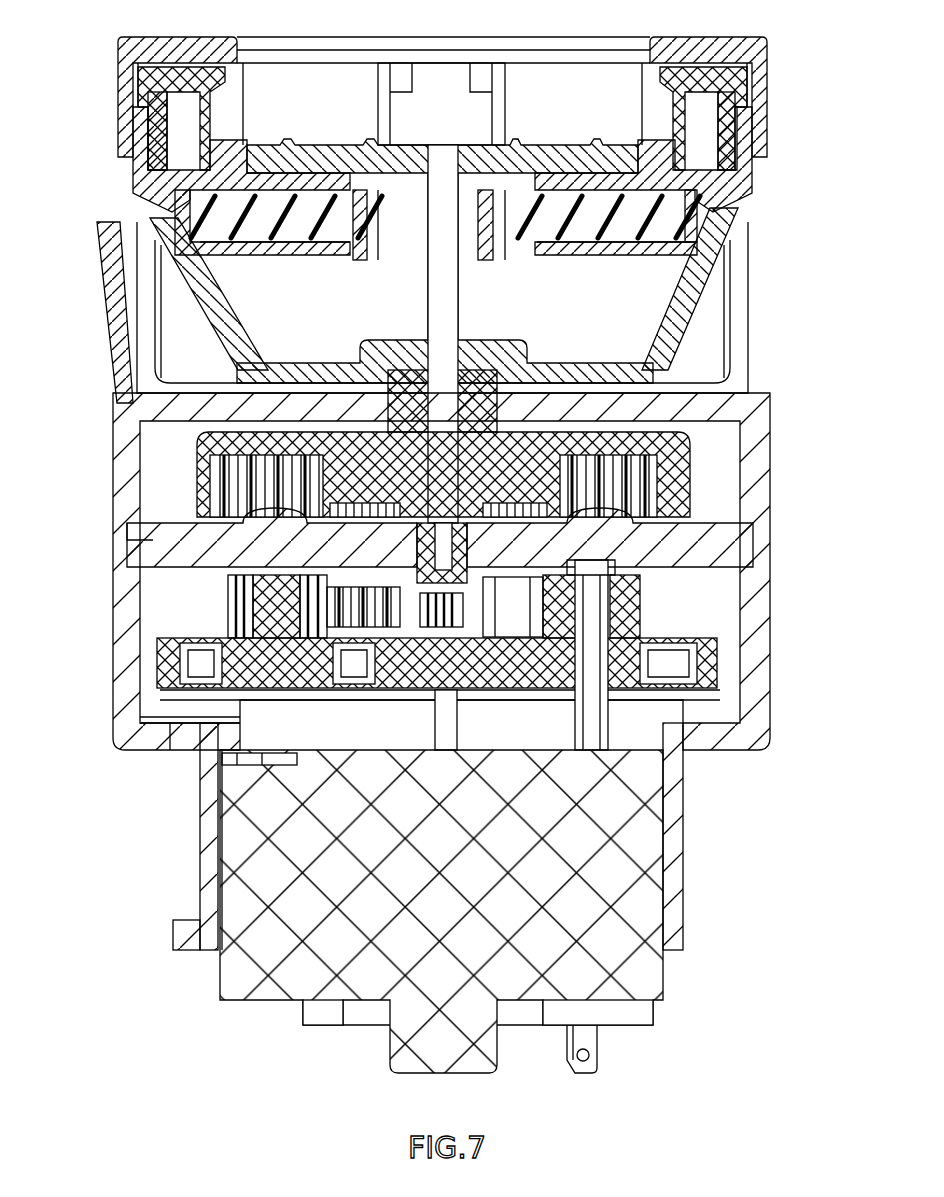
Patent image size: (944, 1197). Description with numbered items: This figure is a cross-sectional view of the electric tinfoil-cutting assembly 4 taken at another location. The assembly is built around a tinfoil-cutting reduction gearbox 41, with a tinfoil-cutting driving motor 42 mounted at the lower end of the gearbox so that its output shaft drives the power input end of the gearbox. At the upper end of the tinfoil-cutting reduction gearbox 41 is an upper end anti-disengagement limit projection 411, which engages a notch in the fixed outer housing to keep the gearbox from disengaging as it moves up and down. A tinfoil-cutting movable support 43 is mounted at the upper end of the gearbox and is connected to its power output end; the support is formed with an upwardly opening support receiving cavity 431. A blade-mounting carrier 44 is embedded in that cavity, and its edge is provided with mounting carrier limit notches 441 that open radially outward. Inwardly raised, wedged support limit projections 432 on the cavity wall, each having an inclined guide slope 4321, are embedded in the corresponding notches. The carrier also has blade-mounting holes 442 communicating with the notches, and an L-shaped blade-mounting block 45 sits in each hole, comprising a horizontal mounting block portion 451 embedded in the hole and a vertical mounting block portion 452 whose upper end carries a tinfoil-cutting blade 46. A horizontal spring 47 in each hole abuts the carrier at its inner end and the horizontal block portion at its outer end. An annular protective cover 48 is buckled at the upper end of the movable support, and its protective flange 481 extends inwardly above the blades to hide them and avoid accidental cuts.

The electric tinfoil-cutting assembly 4 is at (182, 779).
The tinfoil-cutting reduction gearbox 41 is at (617, 448).
The upper end anti-disengagement limit projection 411 is at (118, 308).
The tinfoil-cutting driving motor 42 is at (530, 838).
The tinfoil-cutting movable support 43 is at (180, 348).
The support receiving cavity 431 is at (585, 318).
The support limit projection 432 is at (635, 363).
The inclined guide slope 4321 is at (668, 346).
The blade-mounting carrier 44 is at (590, 158).
The mounting carrier limit notch 441 is at (215, 275).
The blade-mounting hole 442 is at (608, 256).
The blade-mounting block 45 is at (178, 195).
The horizontal mounting block portion 451 is at (225, 266).
The vertical mounting block portion 452 is at (158, 128).
The tinfoil-cutting blade 46 is at (170, 75).
The horizontal spring 47 is at (615, 190).
The protective cover 48 is at (735, 103).
The protective flange 481 is at (220, 55).